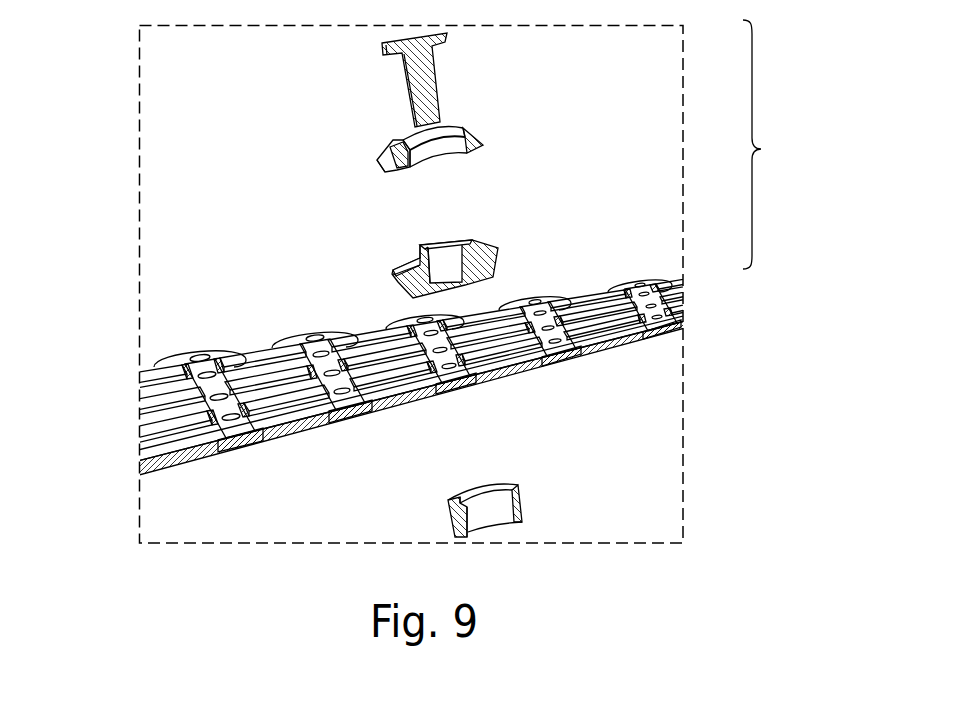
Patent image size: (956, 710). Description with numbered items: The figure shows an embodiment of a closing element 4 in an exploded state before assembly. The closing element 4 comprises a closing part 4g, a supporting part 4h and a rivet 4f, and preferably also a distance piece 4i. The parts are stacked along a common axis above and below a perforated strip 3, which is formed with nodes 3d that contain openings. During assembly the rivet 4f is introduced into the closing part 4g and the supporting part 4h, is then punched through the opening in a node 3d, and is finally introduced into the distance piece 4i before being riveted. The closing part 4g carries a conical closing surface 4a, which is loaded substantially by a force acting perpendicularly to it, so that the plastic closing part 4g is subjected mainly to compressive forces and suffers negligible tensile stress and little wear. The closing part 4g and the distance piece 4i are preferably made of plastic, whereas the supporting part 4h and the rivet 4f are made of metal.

The node 3 is at (678, 295).
The node 3d is at (583, 348).
The closing element 4 is at (765, 144).
The closing surface 4a is at (477, 128).
The rivet 4f is at (425, 97).
The closing part 4g is at (386, 174).
The supporting part 4h is at (490, 263).
The distance piece 4i is at (525, 517).